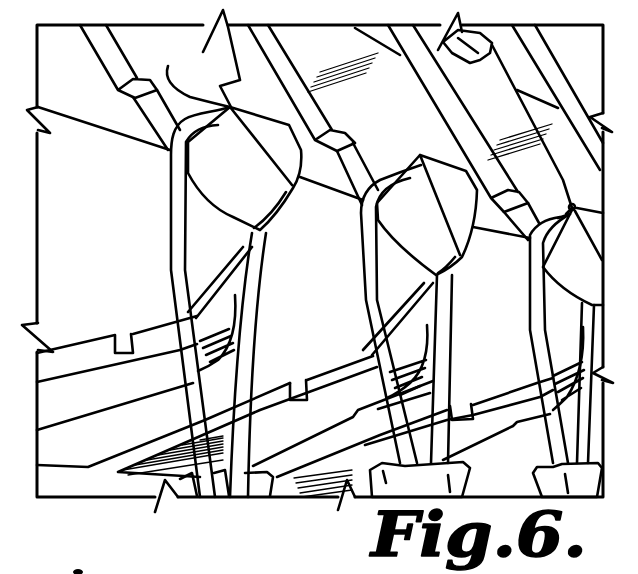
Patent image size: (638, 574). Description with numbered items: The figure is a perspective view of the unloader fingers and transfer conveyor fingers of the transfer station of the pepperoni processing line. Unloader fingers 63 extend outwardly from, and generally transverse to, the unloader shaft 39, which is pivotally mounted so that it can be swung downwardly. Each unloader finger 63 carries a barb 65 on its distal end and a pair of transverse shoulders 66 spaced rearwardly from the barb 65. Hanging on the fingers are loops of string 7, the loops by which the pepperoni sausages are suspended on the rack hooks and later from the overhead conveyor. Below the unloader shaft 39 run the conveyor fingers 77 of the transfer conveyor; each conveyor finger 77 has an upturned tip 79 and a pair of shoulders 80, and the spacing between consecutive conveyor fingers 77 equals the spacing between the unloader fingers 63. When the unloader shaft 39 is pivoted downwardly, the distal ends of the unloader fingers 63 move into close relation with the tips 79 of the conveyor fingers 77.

The unloader finger 63 is at (98, 64).
The transverse shoulders 66 is at (143, 96).
The unloader shaft 39 is at (90, 125).
The loop of string 7 is at (168, 235).
The upturned tip 79 is at (217, 280).
The barb 65 is at (275, 195).
The conveyor finger 77 is at (83, 342).
The shoulders 80 is at (131, 340).